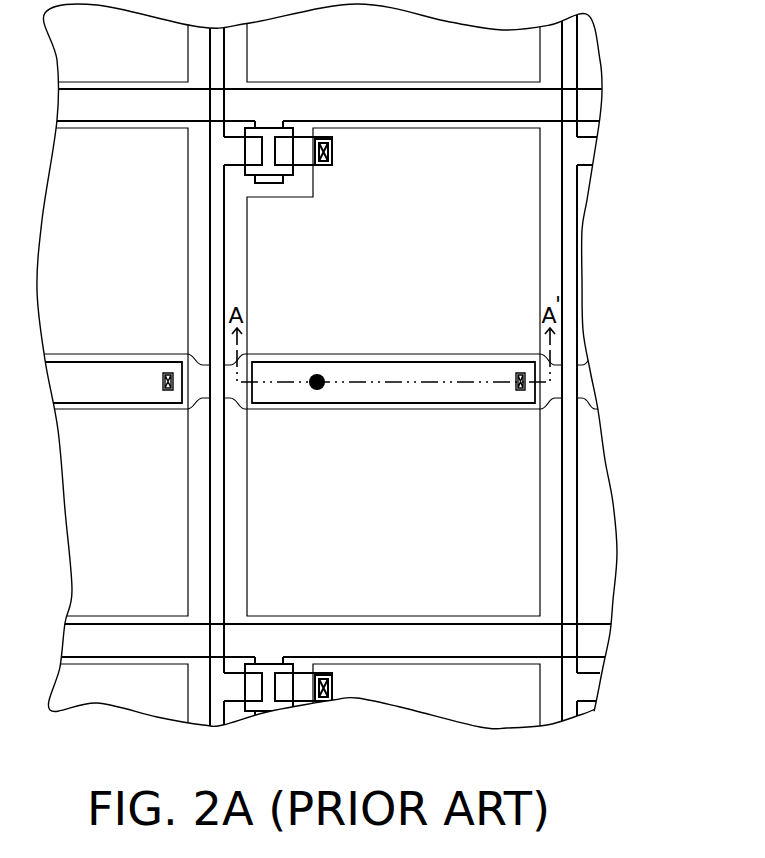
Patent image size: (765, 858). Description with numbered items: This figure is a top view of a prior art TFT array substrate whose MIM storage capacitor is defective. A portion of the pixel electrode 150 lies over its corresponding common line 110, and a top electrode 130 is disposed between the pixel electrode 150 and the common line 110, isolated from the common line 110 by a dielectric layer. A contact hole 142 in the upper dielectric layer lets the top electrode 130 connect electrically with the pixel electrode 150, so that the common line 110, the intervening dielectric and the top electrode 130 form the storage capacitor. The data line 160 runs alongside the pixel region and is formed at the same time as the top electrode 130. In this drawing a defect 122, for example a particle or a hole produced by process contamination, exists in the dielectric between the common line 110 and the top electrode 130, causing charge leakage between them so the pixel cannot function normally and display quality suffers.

The common line 110 is at (585, 380).
The defect 122 is at (317, 373).
The top electrode 130 is at (458, 395).
The contact hole 142 is at (518, 391).
The pixel electrode 150 is at (510, 579).
The data line 160 is at (572, 538).